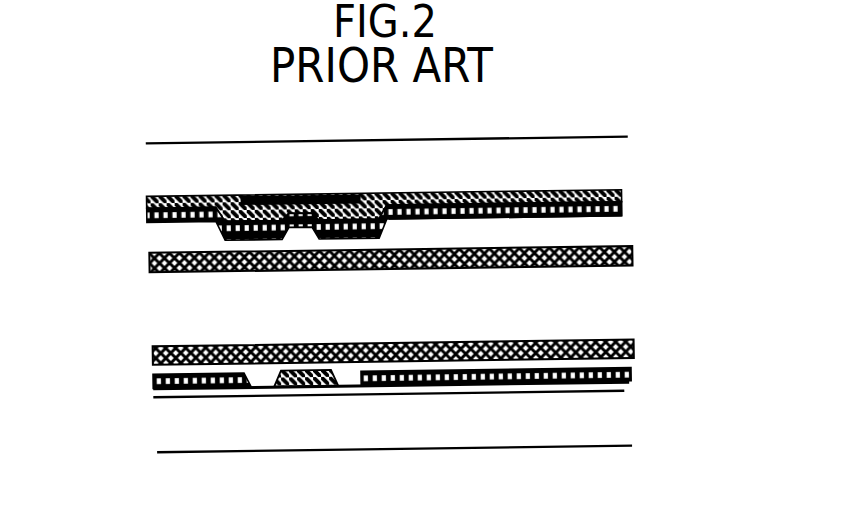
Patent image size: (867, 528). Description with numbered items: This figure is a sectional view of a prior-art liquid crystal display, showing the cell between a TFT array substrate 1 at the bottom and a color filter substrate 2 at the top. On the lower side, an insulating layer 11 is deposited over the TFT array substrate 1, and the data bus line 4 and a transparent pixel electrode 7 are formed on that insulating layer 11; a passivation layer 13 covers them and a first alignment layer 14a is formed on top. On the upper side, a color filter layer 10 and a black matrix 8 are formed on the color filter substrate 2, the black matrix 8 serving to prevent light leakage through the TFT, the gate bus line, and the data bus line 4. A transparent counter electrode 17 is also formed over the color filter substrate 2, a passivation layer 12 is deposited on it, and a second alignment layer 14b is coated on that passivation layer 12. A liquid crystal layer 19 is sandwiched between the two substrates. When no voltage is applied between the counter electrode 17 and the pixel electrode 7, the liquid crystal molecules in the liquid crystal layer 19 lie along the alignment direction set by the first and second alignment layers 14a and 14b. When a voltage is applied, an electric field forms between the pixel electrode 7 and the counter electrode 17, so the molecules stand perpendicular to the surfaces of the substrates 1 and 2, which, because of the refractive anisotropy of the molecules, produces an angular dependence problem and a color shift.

The TFT array substrate 1 is at (620, 428).
The color filter substrate 2 is at (600, 147).
The data bus line 4 is at (310, 383).
The transparent pixel electrode 7 is at (150, 377).
The black matrix 8 is at (303, 197).
The color filter layer 10 is at (617, 190).
The insulating layer 11 is at (623, 387).
The passivation layer 12 is at (613, 232).
The passivation layer 13 is at (625, 360).
The first alignment layer 14a is at (633, 343).
The second alignment layer 14b is at (150, 262).
The transparent counter electrode 17 is at (620, 207).
The liquid crystal layer 19 is at (178, 312).